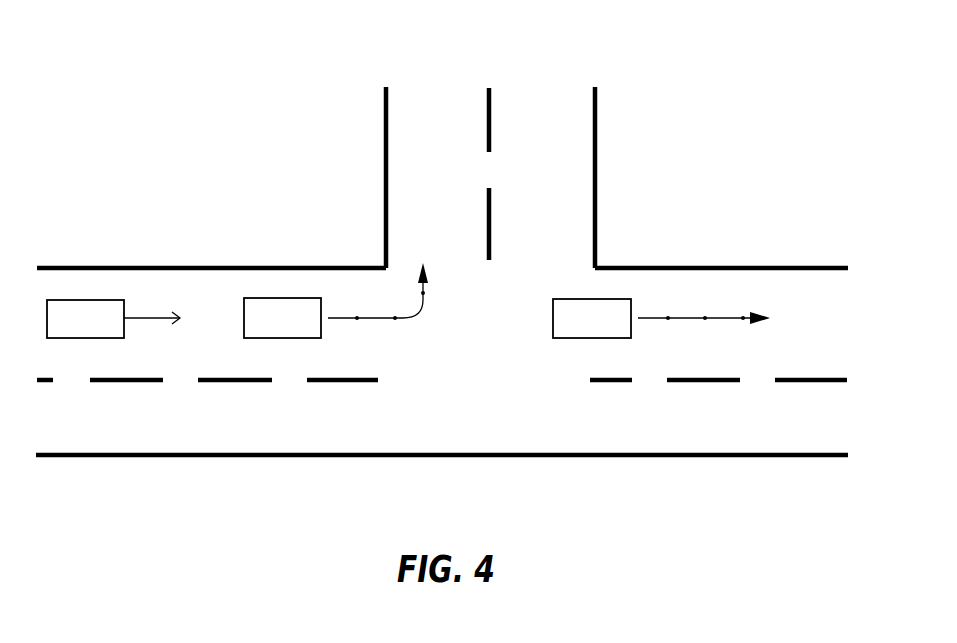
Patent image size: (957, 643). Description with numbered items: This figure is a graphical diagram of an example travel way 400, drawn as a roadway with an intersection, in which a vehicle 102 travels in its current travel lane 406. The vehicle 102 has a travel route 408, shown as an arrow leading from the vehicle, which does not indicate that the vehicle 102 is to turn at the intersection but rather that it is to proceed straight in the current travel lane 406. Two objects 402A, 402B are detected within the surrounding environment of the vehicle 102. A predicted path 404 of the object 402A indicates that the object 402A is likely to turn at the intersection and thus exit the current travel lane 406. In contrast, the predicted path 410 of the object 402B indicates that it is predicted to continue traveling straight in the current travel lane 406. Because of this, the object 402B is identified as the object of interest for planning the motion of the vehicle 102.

The travel way 400 is at (186, 222).
The vehicle 102 is at (102, 331).
The object 402A is at (307, 331).
The object 402B is at (617, 331).
The predicted path 404 is at (420, 312).
The current travel lane 406 is at (831, 334).
The travel route 408 is at (142, 318).
The predicted path 410 is at (685, 318).